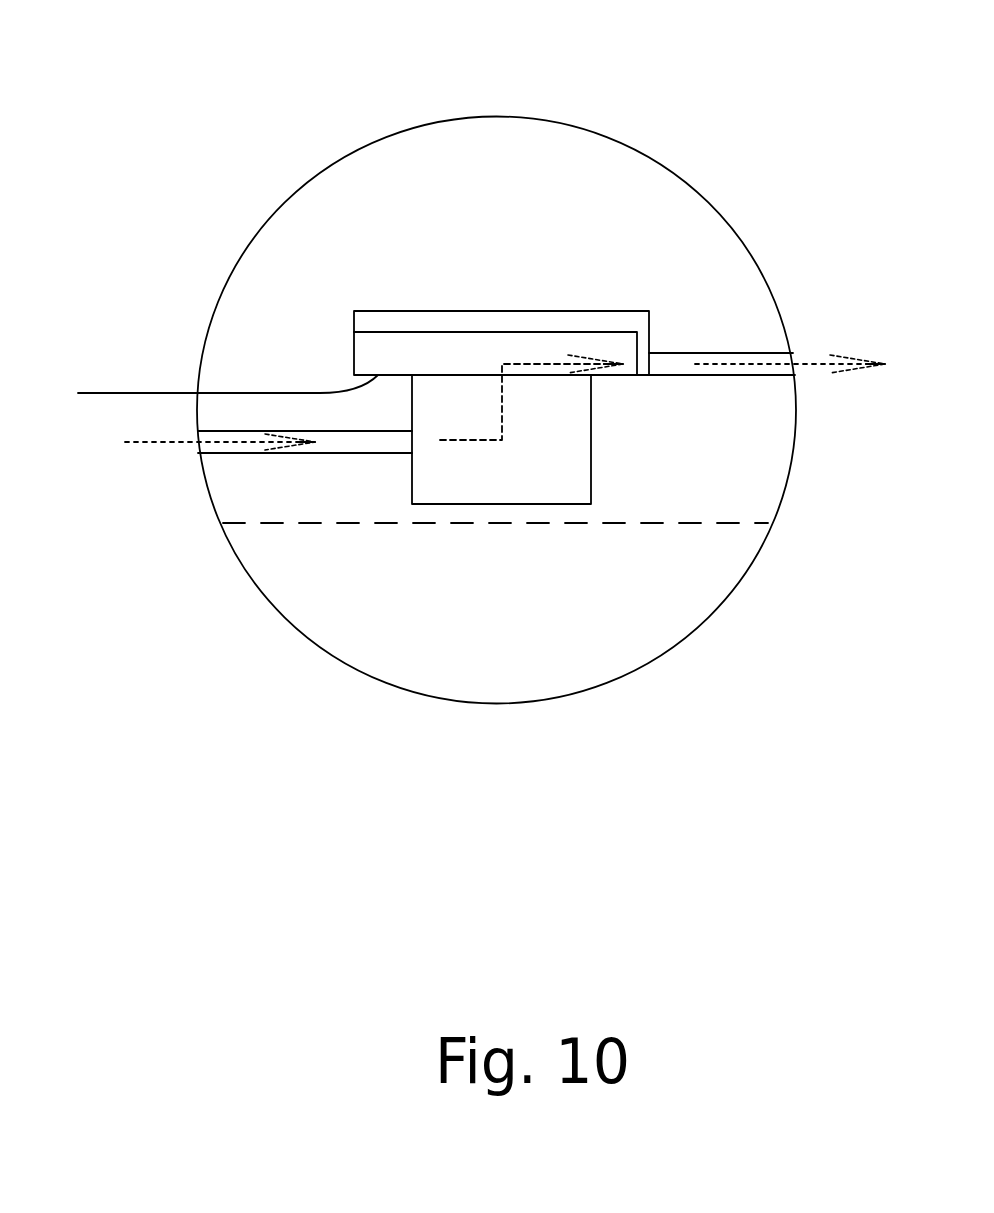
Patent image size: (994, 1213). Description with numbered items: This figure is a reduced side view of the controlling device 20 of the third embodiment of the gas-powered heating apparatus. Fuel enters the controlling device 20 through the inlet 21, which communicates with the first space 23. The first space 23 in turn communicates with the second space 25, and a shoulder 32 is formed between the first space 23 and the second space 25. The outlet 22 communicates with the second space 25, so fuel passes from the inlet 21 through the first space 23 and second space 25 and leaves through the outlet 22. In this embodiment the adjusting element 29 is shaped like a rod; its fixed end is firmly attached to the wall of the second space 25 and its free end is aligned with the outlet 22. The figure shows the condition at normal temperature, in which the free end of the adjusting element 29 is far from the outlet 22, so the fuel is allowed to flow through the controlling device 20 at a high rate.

The controlling device 20 is at (452, 660).
The inlet 21 is at (343, 442).
The outlet 22 is at (673, 363).
The first space 23 is at (547, 452).
The second space 25 is at (372, 320).
The adjusting element 29 is at (504, 351).
The shoulder 32 is at (205, 398).